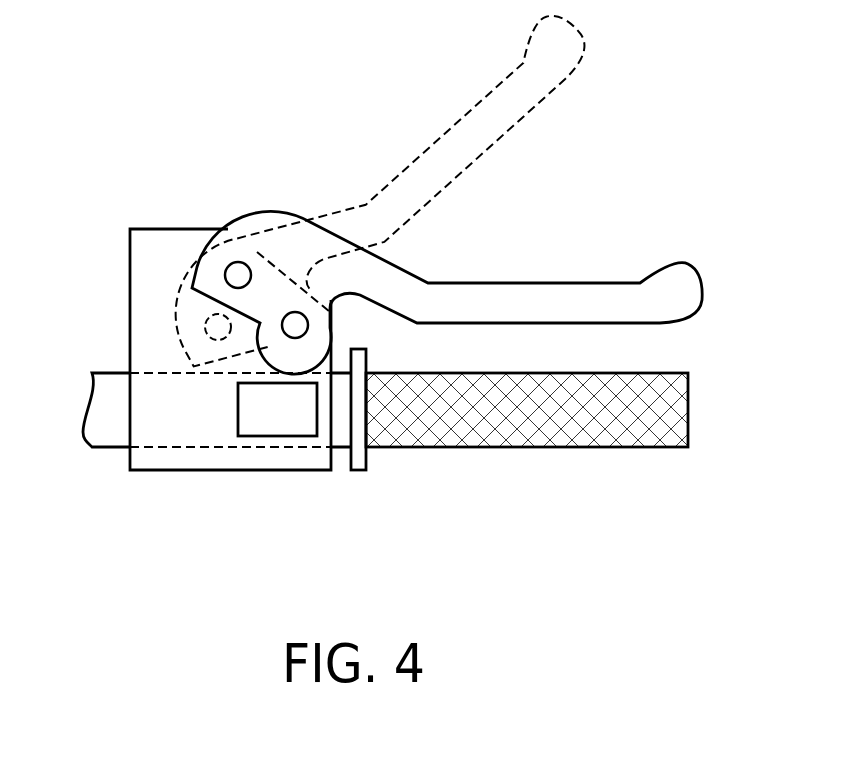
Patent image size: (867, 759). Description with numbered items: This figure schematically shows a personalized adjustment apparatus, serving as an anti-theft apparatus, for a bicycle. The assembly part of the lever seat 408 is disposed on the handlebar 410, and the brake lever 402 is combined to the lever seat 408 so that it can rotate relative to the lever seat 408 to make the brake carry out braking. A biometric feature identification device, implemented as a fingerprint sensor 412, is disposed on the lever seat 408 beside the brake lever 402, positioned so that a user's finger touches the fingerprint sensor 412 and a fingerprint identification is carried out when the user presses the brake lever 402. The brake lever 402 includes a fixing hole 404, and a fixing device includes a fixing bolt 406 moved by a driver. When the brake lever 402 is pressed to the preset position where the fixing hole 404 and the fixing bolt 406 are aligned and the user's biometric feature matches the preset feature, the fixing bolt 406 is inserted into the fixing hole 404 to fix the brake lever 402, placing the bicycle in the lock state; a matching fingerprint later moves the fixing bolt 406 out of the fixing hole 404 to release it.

The brake lever 402 is at (543, 283).
The fixing hole 404 is at (205, 328).
The fixing bolt 406 is at (241, 273).
The lever seat 408 is at (130, 233).
The handlebar 410 is at (603, 423).
The fingerprint sensor 412 is at (277, 420).